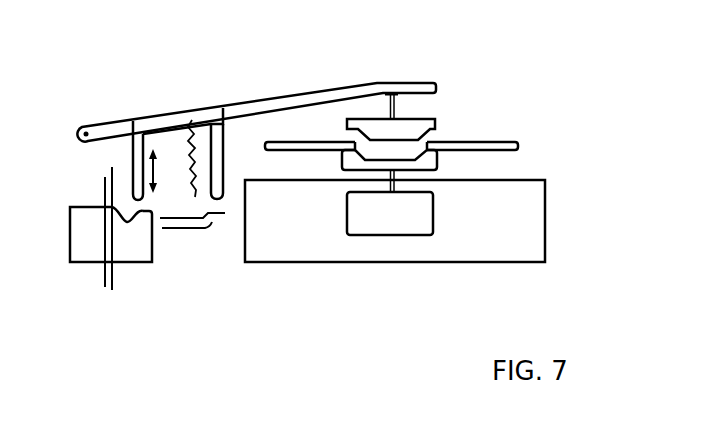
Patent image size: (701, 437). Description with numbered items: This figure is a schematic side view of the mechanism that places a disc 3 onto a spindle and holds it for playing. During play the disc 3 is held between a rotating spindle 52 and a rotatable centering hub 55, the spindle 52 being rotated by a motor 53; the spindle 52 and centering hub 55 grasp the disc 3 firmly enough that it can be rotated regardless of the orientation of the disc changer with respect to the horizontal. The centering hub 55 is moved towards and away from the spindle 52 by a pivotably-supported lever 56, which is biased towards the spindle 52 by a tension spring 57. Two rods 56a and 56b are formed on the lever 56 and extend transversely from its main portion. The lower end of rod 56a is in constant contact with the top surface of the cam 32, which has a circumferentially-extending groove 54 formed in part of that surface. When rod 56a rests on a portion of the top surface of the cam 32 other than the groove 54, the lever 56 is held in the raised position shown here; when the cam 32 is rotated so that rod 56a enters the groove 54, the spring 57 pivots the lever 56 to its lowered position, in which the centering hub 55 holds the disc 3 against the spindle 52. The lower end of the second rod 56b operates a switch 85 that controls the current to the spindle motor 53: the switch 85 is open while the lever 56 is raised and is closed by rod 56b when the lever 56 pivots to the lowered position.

The disc 3 is at (520, 147).
The cam 32 is at (88, 263).
The spindle 52 is at (462, 166).
The motor 53 is at (517, 243).
The groove 54 is at (142, 224).
The centering hub 55 is at (440, 107).
The lever 56 is at (164, 128).
The rod 56a is at (134, 156).
The second rod 56b is at (221, 174).
The tension spring 57 is at (184, 165).
The switch 85 is at (207, 232).